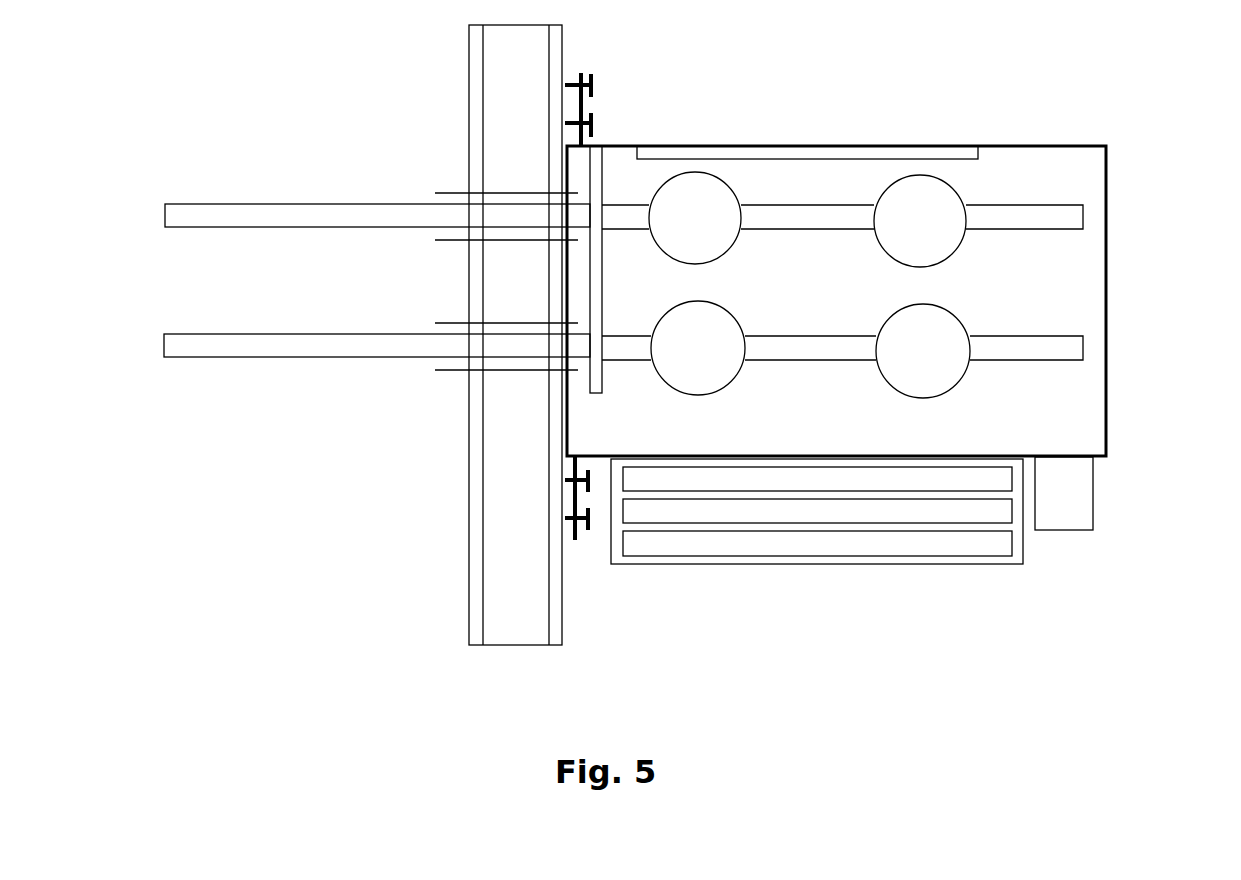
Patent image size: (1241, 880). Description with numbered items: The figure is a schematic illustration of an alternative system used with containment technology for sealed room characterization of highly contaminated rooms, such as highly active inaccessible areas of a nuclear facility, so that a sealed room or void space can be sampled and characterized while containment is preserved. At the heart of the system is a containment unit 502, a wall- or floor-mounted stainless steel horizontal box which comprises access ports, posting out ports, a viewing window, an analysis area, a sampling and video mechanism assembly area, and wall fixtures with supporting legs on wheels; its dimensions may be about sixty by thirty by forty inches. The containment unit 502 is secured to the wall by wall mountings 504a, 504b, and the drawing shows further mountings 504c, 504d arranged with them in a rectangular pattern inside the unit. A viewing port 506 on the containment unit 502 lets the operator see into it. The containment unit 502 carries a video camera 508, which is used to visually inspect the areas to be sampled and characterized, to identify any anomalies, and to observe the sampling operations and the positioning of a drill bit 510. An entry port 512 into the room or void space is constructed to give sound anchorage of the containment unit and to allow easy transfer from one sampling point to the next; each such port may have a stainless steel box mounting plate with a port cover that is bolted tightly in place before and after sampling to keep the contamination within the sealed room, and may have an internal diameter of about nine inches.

The containment unit 502 is at (1107, 243).
The wall mounting 504a is at (945, 382).
The wall mounting 504b is at (940, 255).
The roller 504c is at (720, 254).
The roller 504d is at (718, 378).
The viewing port 506 is at (897, 155).
The video camera 508 is at (199, 192).
The drill bit 510 is at (187, 357).
The entry port 512 is at (208, 200).